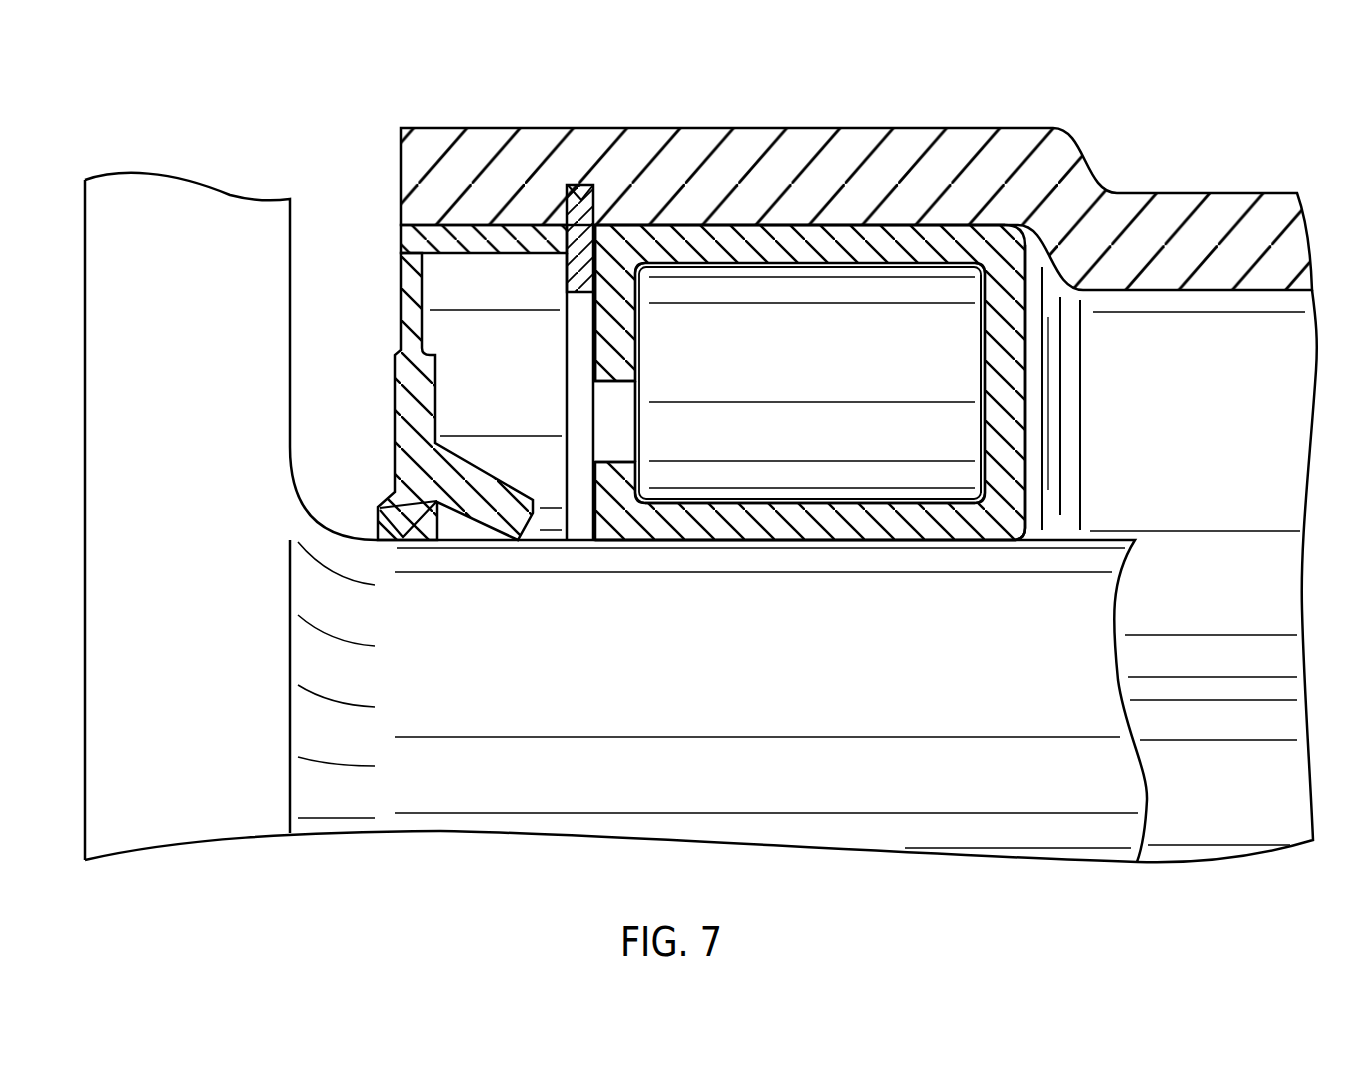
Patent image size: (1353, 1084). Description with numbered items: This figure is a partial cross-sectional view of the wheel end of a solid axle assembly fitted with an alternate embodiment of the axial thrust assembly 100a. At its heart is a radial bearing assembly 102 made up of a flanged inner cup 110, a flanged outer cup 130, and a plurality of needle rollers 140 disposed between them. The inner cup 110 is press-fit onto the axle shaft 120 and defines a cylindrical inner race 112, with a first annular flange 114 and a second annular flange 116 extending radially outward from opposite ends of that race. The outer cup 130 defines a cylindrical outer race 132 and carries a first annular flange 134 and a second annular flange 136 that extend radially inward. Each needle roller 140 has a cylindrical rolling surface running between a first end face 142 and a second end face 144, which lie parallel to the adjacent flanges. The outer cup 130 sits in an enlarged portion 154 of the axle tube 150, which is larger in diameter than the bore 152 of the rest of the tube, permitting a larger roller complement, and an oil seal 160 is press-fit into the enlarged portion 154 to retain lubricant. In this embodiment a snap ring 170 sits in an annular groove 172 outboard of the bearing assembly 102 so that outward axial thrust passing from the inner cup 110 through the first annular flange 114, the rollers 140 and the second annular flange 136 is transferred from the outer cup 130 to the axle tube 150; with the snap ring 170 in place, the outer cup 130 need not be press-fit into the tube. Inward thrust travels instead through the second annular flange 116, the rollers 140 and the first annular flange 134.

The axial thrust assembly 100a is at (680, 636).
The radial bearing assembly 102 is at (1100, 422).
The inner cup 110 is at (965, 545).
The inner race 112 is at (818, 488).
The first annular flange 114 is at (1028, 488).
The second annular flange 116 is at (573, 518).
The axle shaft 120 is at (822, 693).
The outer cup 130 is at (848, 222).
The outer race 132 is at (833, 290).
The first annular flange 134 is at (1043, 358).
The second annular flange 136 is at (642, 322).
The needle rollers 140 is at (822, 375).
The first end face 142 is at (985, 430).
The second end face 144 is at (640, 443).
The axle tube 150 is at (1040, 114).
The bore 152 is at (1168, 305).
The enlarged portion 154 is at (487, 128).
The oil seal 160 is at (401, 305).
The snap ring 170 is at (567, 262).
The annular groove 172 is at (580, 197).